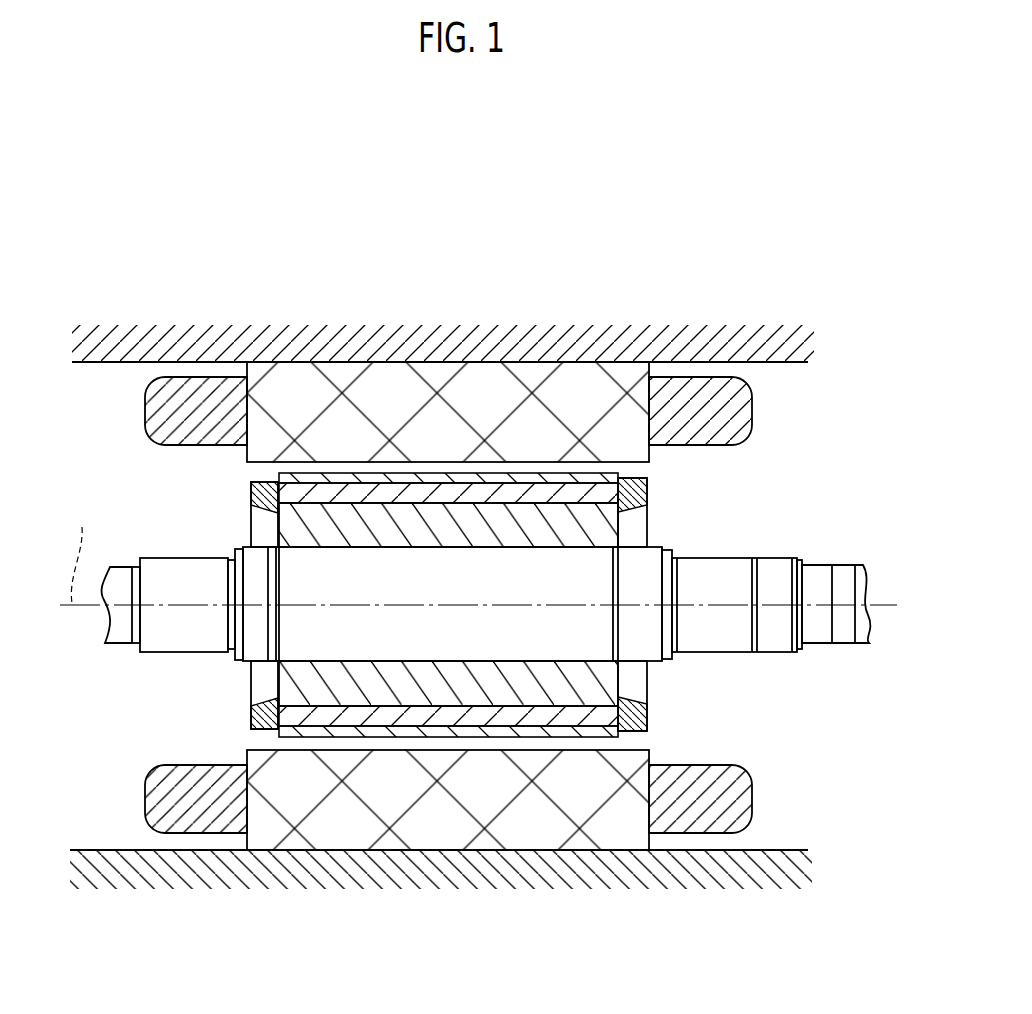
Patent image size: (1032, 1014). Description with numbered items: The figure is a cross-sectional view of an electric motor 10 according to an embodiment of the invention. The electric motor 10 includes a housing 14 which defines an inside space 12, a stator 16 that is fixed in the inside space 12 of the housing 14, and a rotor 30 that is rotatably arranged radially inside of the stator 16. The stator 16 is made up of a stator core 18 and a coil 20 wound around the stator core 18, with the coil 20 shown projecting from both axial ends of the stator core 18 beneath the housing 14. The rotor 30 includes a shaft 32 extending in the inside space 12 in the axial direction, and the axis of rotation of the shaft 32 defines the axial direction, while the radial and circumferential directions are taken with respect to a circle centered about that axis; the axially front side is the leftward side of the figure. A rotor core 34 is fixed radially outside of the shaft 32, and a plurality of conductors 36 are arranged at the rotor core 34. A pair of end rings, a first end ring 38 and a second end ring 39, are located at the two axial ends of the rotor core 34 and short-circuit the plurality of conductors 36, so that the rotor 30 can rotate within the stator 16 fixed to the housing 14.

The electric motor 10 is at (832, 127).
The inside space 12 is at (780, 363).
The housing 14 is at (705, 343).
The stator 16 is at (289, 354).
The stator core 18 is at (487, 395).
The coil 20 is at (193, 412).
The rotor 30 is at (742, 526).
The shaft 32 is at (177, 577).
The rotor core 34 is at (370, 732).
The conductors 36 is at (533, 492).
The first end ring 38 is at (252, 488).
The second end ring 39 is at (647, 490).